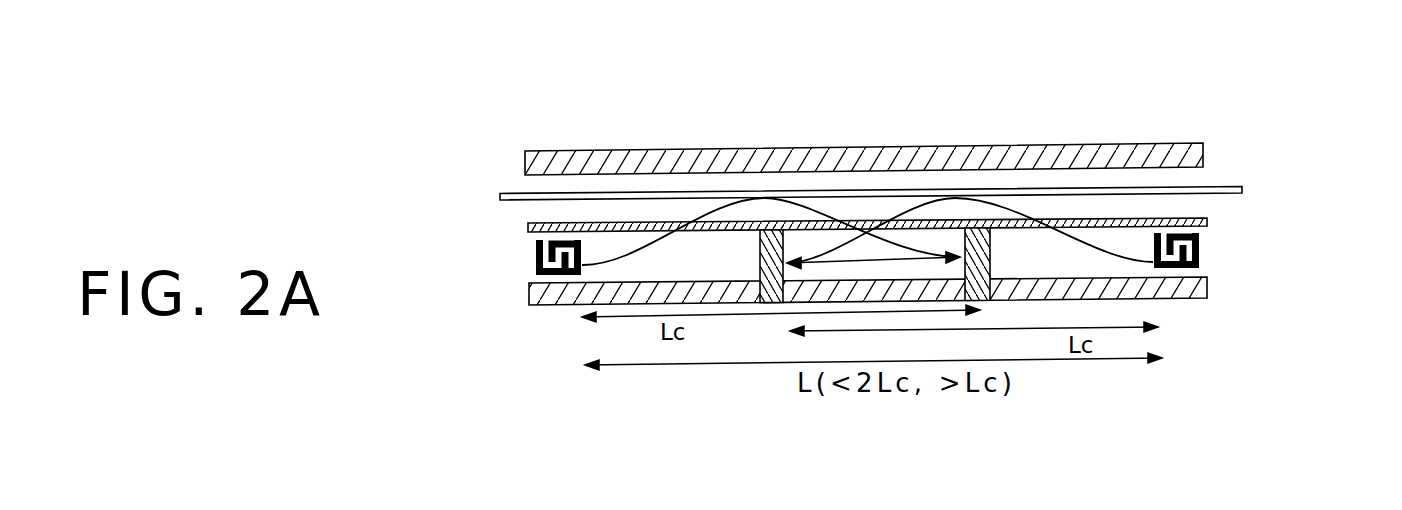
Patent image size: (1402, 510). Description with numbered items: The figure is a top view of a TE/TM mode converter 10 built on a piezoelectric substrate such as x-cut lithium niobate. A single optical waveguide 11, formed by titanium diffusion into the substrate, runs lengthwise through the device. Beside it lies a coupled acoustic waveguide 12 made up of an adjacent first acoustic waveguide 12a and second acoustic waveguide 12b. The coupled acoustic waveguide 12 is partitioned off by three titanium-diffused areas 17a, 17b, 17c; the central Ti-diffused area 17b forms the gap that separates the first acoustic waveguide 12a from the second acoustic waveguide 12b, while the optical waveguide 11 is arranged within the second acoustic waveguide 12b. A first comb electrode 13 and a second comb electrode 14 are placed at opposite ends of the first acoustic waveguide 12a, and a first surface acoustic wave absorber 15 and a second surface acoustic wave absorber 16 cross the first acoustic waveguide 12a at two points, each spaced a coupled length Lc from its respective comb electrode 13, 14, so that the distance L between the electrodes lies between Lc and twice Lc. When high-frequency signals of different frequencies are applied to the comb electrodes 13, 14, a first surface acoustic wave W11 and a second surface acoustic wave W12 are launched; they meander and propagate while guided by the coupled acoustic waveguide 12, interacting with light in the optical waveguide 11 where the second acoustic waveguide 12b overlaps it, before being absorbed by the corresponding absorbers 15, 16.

The TE/TM mode converter 10 is at (996, 126).
The optical waveguide 11 is at (1220, 184).
The coupled acoustic waveguide 12 is at (1333, 188).
The first acoustic waveguide 12a is at (1208, 224).
The second acoustic waveguide 12b is at (1205, 205).
The first comb electrode 13 is at (1199, 262).
The second comb electrode 14 is at (533, 258).
The first surface acoustic wave absorber 15 is at (760, 260).
The second surface acoustic wave absorber 16 is at (990, 258).
The Ti-diffused area 17a is at (529, 293).
The central Ti-diffused area 17b is at (528, 228).
The Ti-diffused area 17c is at (525, 162).
The first surface acoustic wave W11 is at (1033, 216).
The second surface acoustic wave W12 is at (714, 216).